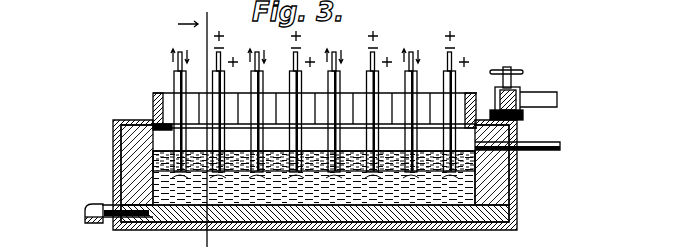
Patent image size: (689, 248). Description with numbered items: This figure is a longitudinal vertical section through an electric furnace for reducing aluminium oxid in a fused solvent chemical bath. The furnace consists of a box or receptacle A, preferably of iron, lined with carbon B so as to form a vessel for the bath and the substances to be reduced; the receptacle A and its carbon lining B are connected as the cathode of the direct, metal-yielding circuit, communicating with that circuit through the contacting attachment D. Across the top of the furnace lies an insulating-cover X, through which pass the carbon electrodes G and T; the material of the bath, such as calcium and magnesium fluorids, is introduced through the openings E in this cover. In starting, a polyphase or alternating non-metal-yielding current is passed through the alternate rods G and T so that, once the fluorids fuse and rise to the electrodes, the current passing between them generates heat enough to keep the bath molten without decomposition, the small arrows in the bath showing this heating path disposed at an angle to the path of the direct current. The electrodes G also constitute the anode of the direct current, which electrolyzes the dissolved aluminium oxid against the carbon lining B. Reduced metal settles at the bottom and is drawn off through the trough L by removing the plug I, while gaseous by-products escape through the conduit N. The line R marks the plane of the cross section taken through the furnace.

The box or receptacle A is at (517, 188).
The carbon lining B is at (505, 210).
The openings E is at (314, 170).
The electrodes G is at (297, 83).
The insulating-cover X is at (153, 108).
The electrodes T is at (174, 80).
The section line R is at (193, 123).
The contacting attachment D is at (538, 88).
The conduit N is at (542, 142).
The plug I is at (112, 205).
The trough L is at (85, 212).